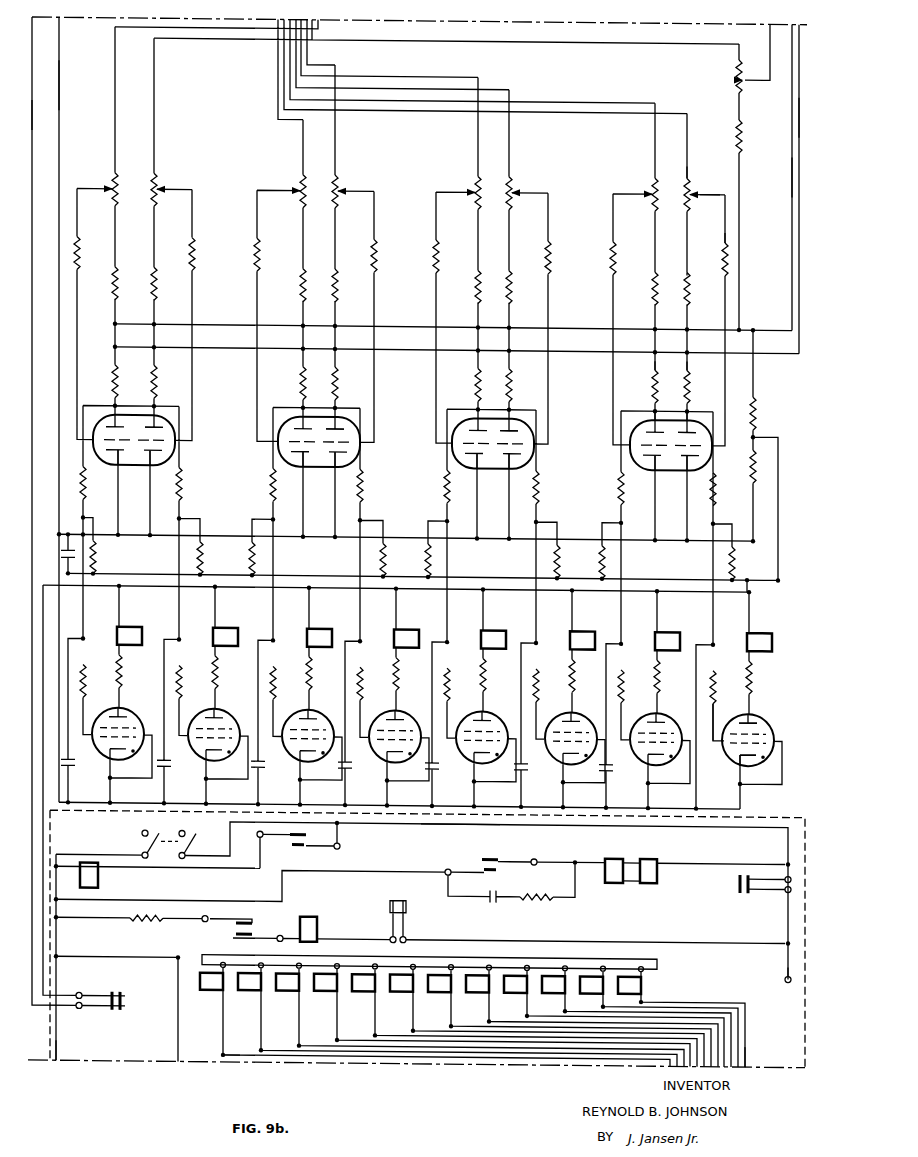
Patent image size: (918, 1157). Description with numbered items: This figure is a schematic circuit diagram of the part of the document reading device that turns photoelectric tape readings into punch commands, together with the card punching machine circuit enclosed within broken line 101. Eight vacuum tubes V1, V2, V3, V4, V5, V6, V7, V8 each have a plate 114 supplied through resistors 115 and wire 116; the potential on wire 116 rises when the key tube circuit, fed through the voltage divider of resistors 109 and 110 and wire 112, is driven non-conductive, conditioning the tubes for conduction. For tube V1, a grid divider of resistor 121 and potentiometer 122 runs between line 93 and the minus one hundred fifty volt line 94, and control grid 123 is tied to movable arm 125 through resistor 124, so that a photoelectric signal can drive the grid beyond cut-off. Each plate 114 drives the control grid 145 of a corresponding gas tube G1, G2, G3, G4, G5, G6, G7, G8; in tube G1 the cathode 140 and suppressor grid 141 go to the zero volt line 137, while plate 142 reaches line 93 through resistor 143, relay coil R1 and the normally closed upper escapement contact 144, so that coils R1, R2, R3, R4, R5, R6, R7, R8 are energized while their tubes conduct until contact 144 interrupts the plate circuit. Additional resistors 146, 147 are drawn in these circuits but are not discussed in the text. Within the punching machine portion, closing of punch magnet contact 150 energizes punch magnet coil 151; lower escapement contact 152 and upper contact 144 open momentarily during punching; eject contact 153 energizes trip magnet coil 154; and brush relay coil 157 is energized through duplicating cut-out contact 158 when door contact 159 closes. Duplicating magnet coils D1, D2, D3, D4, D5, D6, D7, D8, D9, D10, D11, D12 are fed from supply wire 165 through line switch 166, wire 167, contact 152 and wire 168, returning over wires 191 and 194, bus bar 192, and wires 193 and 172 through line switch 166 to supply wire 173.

The zero volt line 137 is at (59, 82).
The line 93 is at (33, 118).
The wire 112 is at (770, 55).
The resistor 109 is at (737, 80).
The resistor 110 is at (738, 130).
The wire 116 is at (799, 111).
The minus one hundred fifty volt line 94 is at (792, 170).
The potentiometer 122 is at (687, 182).
The movable arm 125 is at (692, 198).
The resistor 124 is at (725, 250).
The resistor 121 is at (687, 290).
The resistors 115 is at (686, 374).
The plates 114 is at (678, 426).
The control grid 123 is at (710, 450).
The resistor 147 is at (708, 500).
The vacuum tube V1 is at (687, 416).
The vacuum tube V2 is at (649, 416).
The vacuum tube V3 is at (509, 416).
The vacuum tube V4 is at (471, 416).
The vacuum tube V5 is at (334, 416).
The vacuum tube V6 is at (295, 416).
The vacuum tube V7 is at (152, 416).
The vacuum tube V8 is at (110, 416).
The relay coil R1 is at (759, 627).
The relay coil R2 is at (667, 627).
The relay coil R3 is at (582, 627).
The relay coil R4 is at (493, 627).
The relay coil R5 is at (406, 627).
The relay coil R6 is at (319, 627).
The relay coil R7 is at (225, 627).
The relay coil R8 is at (129, 627).
The gas tube G1 is at (771, 712).
The gas tube G2 is at (678, 712).
The gas tube G3 is at (593, 712).
The gas tube G4 is at (504, 712).
The gas tube G5 is at (417, 712).
The gas tube G6 is at (330, 712).
The gas tube G7 is at (236, 712).
The gas tube G8 is at (140, 712).
The resistor 146 is at (714, 678).
The resistor 143 is at (752, 674).
The plate 142 is at (718, 728).
The suppressor grid 141 is at (756, 718).
The control grid 145 is at (724, 745).
The cathode 140 is at (746, 762).
The broken line 101 is at (757, 815).
The wire 173 is at (145, 829).
The wire 165 is at (178, 829).
The line switch 166 is at (146, 851).
The eject contact 153 is at (308, 847).
The wire 167 is at (421, 822).
The punch magnet contact 150 is at (484, 854).
The punch magnet coil 151 is at (657, 870).
The escapement contact (lower) 152 is at (746, 886).
The trip magnet coil 154 is at (98, 884).
The brush relay coil 157 is at (301, 922).
The duplicating cut-out contact 158 is at (393, 914).
The door contact 159 is at (233, 930).
The wire 193 is at (82, 957).
The escapement contact (upper) 144 is at (115, 992).
The bus bar 192 is at (657, 959).
The wire 168 is at (788, 975).
The wire 194 is at (694, 1010).
The wire 172 is at (56, 1058).
The wire 191 is at (231, 1056).
The duplicating magnet coil D1 is at (208, 991).
The duplicating magnet coil D2 is at (246, 991).
The duplicating magnet coil D3 is at (284, 991).
The duplicating magnet coil D4 is at (322, 991).
The duplicating magnet coil D5 is at (360, 991).
The duplicating magnet coil D6 is at (398, 991).
The duplicating magnet coil D7 is at (436, 991).
The duplicating magnet coil D8 is at (474, 991).
The duplicating magnet coil D9 is at (512, 991).
The duplicating magnet coil D10 is at (552, 991).
The duplicating magnet coil D11 is at (590, 991).
The duplicating magnet coil D12 is at (644, 988).